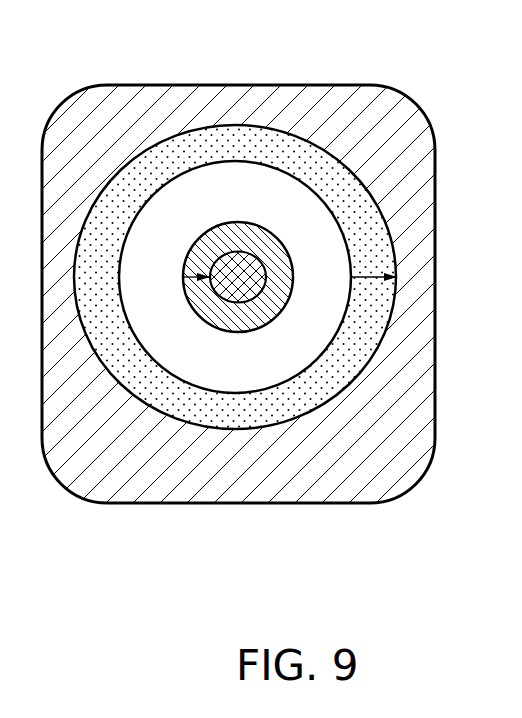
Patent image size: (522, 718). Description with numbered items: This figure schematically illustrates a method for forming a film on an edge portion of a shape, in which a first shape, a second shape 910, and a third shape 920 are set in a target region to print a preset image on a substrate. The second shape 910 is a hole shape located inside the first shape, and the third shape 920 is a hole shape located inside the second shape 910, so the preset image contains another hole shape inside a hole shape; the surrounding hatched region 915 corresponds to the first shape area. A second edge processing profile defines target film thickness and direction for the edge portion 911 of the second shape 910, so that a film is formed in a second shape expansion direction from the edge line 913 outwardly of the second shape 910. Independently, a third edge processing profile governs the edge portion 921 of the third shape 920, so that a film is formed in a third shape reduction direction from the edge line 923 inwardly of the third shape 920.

The second shape 910 is at (190, 190).
The edge portion of the second shape 911 is at (240, 137).
The edge line of the second shape 913 is at (292, 176).
The housing 915 is at (310, 217).
The third shape 920 is at (200, 295).
The edge portion of the third shape 921 is at (247, 315).
The edge line of the third shape 923 is at (290, 300).